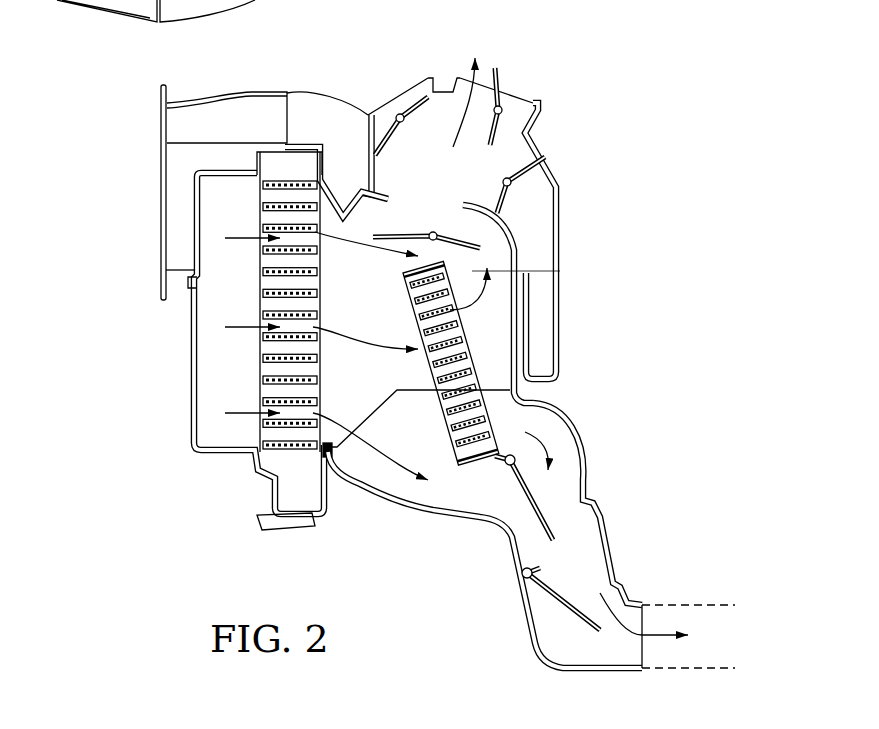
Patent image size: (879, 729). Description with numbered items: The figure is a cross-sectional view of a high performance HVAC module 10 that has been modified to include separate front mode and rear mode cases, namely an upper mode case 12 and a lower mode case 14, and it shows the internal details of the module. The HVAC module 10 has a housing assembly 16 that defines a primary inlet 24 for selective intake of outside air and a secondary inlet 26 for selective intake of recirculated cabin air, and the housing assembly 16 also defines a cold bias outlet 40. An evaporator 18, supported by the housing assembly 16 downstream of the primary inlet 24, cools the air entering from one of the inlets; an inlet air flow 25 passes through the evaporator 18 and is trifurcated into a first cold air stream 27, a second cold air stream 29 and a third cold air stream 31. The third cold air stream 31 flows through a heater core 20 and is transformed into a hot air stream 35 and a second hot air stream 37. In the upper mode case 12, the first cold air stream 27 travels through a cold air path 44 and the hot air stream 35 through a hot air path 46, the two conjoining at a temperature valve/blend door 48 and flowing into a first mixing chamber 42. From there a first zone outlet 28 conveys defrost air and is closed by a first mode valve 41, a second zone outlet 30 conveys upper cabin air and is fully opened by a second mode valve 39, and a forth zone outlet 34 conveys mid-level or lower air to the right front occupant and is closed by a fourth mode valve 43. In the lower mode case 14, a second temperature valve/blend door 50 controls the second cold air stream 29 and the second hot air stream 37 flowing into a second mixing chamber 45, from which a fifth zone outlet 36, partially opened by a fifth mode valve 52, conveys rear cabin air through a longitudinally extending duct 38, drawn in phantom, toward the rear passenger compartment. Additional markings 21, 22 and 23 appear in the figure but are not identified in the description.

The HVAC module 10 is at (408, 347).
The upper mode case 12 is at (558, 187).
The lower mode case 14 is at (589, 444).
The housing assembly 16 is at (325, 92).
The evaporator 18 is at (268, 362).
The heater core 20 is at (467, 380).
The air flow 21 is at (470, 82).
The air flow 22 is at (412, 570).
The air outlet 23 is at (665, 632).
The primary inlet 24 is at (160, 135).
The inlet air flow 25 is at (265, 330).
The secondary inlet 26 is at (293, 95).
The first cold air stream 27 is at (363, 250).
The first zone outlet 28 is at (428, 97).
The second cold air stream 29 is at (345, 478).
The second zone outlet 30 is at (533, 103).
The third cold air stream 31 is at (363, 330).
The forth zone outlet 34 is at (540, 352).
The hot air stream 35 is at (525, 312).
The fifth zone outlet 36 is at (637, 650).
The second hot air stream 37 is at (535, 433).
The longitudinally extending duct 38 is at (668, 608).
The second mode valve 39 is at (497, 68).
The cold bias outlet 40 is at (260, 530).
The first mode valve 41 is at (390, 120).
The first mixing chamber 42 is at (510, 178).
The fourth mode valve 43 is at (437, 223).
The cold air path 44 is at (385, 218).
The second mixing chamber 45 is at (580, 555).
The hot air path 46 is at (500, 295).
The temperature valve/blend door 48 is at (437, 247).
The temperature valve/blend door 50 is at (540, 503).
The fifth mode valve 52 is at (577, 615).